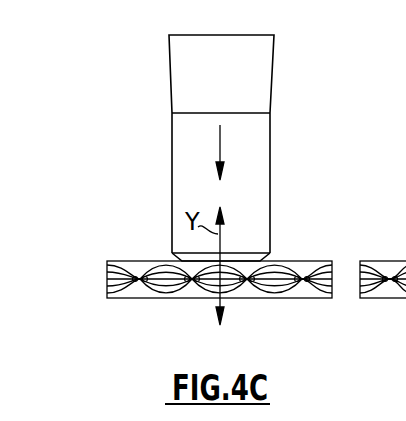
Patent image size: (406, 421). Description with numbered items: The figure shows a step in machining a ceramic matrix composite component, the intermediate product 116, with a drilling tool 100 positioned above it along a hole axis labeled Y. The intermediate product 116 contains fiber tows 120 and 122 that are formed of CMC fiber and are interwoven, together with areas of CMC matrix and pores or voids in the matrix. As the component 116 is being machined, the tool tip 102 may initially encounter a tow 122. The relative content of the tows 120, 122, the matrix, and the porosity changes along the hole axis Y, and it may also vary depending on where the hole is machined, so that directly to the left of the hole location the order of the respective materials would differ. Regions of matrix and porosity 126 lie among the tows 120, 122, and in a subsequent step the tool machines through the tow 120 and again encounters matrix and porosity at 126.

The probe body 100 is at (178, 99).
The tool tip 102 is at (250, 253).
The intermediate product 116 is at (205, 282).
The fiber tow 120 is at (124, 280).
The fiber tow 122 is at (208, 266).
The matrix and porosity 126 is at (255, 283).